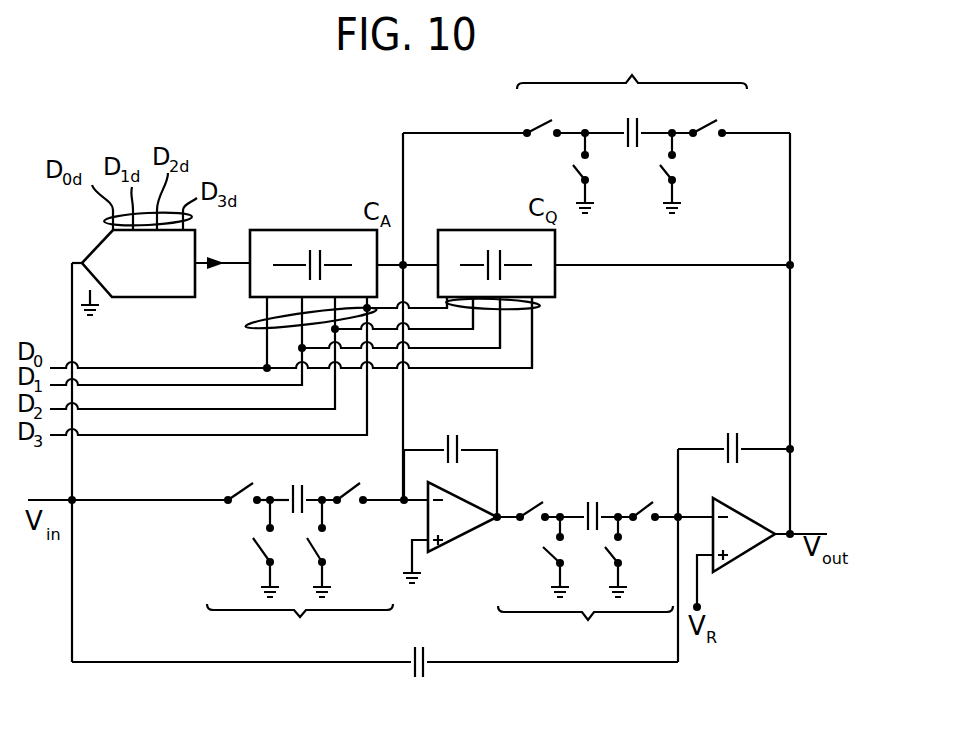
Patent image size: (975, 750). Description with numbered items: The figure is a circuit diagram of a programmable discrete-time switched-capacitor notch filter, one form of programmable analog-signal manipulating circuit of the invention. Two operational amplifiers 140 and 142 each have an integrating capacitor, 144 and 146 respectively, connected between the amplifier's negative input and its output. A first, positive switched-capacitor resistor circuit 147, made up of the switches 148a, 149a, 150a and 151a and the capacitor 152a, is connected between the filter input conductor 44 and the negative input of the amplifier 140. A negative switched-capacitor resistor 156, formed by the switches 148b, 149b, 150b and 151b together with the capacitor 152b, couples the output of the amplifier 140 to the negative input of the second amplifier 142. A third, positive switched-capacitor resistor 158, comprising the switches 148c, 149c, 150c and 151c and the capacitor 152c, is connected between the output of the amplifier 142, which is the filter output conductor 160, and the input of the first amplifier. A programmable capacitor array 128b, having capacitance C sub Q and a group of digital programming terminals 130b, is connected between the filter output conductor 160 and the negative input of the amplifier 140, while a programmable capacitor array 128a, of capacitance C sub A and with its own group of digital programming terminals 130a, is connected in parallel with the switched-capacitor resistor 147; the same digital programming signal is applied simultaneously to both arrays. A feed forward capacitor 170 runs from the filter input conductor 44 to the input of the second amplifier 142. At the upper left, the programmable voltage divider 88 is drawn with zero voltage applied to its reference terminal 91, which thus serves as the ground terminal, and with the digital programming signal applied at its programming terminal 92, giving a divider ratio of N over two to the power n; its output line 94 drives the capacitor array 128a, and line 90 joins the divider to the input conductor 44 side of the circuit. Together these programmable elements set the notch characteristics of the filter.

The filter input conductor 44 is at (50, 495).
The programmable voltage divider 88 is at (135, 277).
The input line 90 is at (67, 283).
The ground terminal 91 is at (100, 297).
The programming terminal 92 is at (106, 221).
The output line 94 is at (232, 270).
The programmable capacitor array 128a is at (327, 230).
The programmable capacitor array 128b is at (503, 230).
The digital programming terminals 130a is at (250, 325).
The digital programming terminals 130b is at (543, 307).
The operational amplifier 140 is at (452, 520).
The operational amplifier 142 is at (738, 545).
The integrating capacitor 144 is at (452, 434).
The integrating capacitor 146 is at (729, 433).
The positive switched-capacitor resistor circuit 147 is at (300, 625).
The switch 148a is at (238, 492).
The switch 148b is at (548, 557).
The switch 148c is at (540, 127).
The switch 149a is at (347, 488).
The switch 149b is at (643, 498).
The switch 149c is at (706, 125).
The switch 150a is at (255, 551).
The switch 150b is at (530, 502).
The switch 150c is at (577, 171).
The switch 151a is at (330, 549).
The switch 151b is at (617, 548).
The switch 151c is at (676, 171).
The capacitor 152a is at (296, 484).
The capacitor 152b is at (593, 500).
The capacitor 152c is at (628, 118).
The negative switched-capacitor resistor 156 is at (585, 626).
The positive switched-capacitor resistor 158 is at (632, 66).
The filter output conductor 160 is at (813, 527).
The feed forward capacitor 170 is at (423, 647).